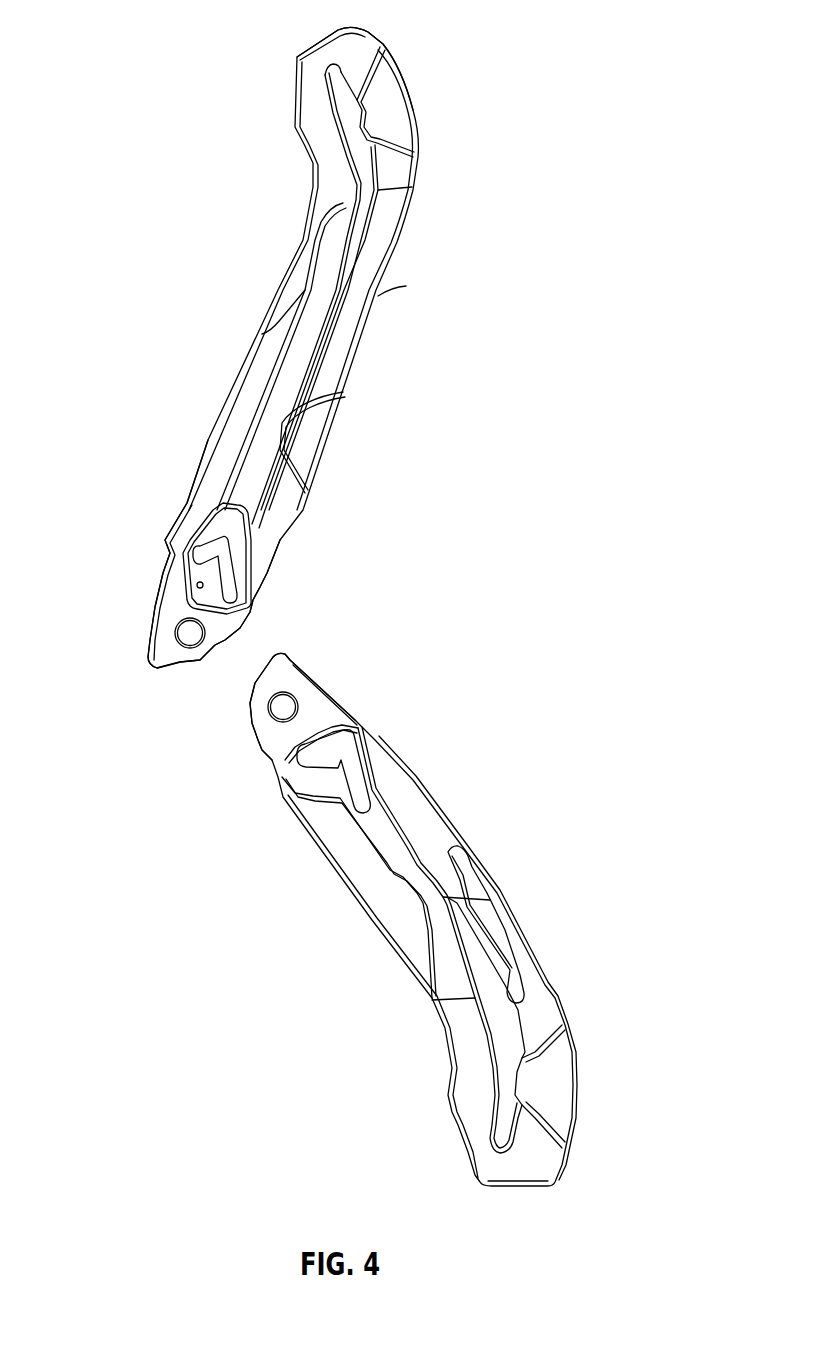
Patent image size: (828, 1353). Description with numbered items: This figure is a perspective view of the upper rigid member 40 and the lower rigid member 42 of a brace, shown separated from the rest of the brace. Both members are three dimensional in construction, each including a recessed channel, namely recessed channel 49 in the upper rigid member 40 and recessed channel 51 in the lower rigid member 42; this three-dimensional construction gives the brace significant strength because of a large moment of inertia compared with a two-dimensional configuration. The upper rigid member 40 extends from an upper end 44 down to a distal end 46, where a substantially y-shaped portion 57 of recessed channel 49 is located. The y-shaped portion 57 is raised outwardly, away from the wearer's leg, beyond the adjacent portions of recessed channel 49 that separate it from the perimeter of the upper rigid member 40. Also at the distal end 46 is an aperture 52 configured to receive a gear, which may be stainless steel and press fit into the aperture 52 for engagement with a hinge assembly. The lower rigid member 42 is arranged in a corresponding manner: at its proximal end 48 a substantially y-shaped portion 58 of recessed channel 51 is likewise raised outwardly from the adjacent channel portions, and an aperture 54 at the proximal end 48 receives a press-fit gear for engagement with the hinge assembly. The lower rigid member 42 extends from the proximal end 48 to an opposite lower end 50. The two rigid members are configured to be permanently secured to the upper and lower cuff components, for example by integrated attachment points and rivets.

The upper rigid member 40 is at (281, 376).
The lower rigid member 42 is at (408, 880).
The first end of first arm 44 is at (308, 80).
The distal end 46 is at (157, 653).
The proximal end 48 is at (267, 733).
The recessed channel 49 is at (325, 295).
The second end of second arm 50 is at (560, 1113).
The recessed channel 51 is at (482, 973).
The aperture 52 is at (195, 635).
The aperture 54 is at (287, 707).
The substantially y-shaped portion 57 is at (223, 537).
The substantially y-shaped portion 58 is at (350, 735).